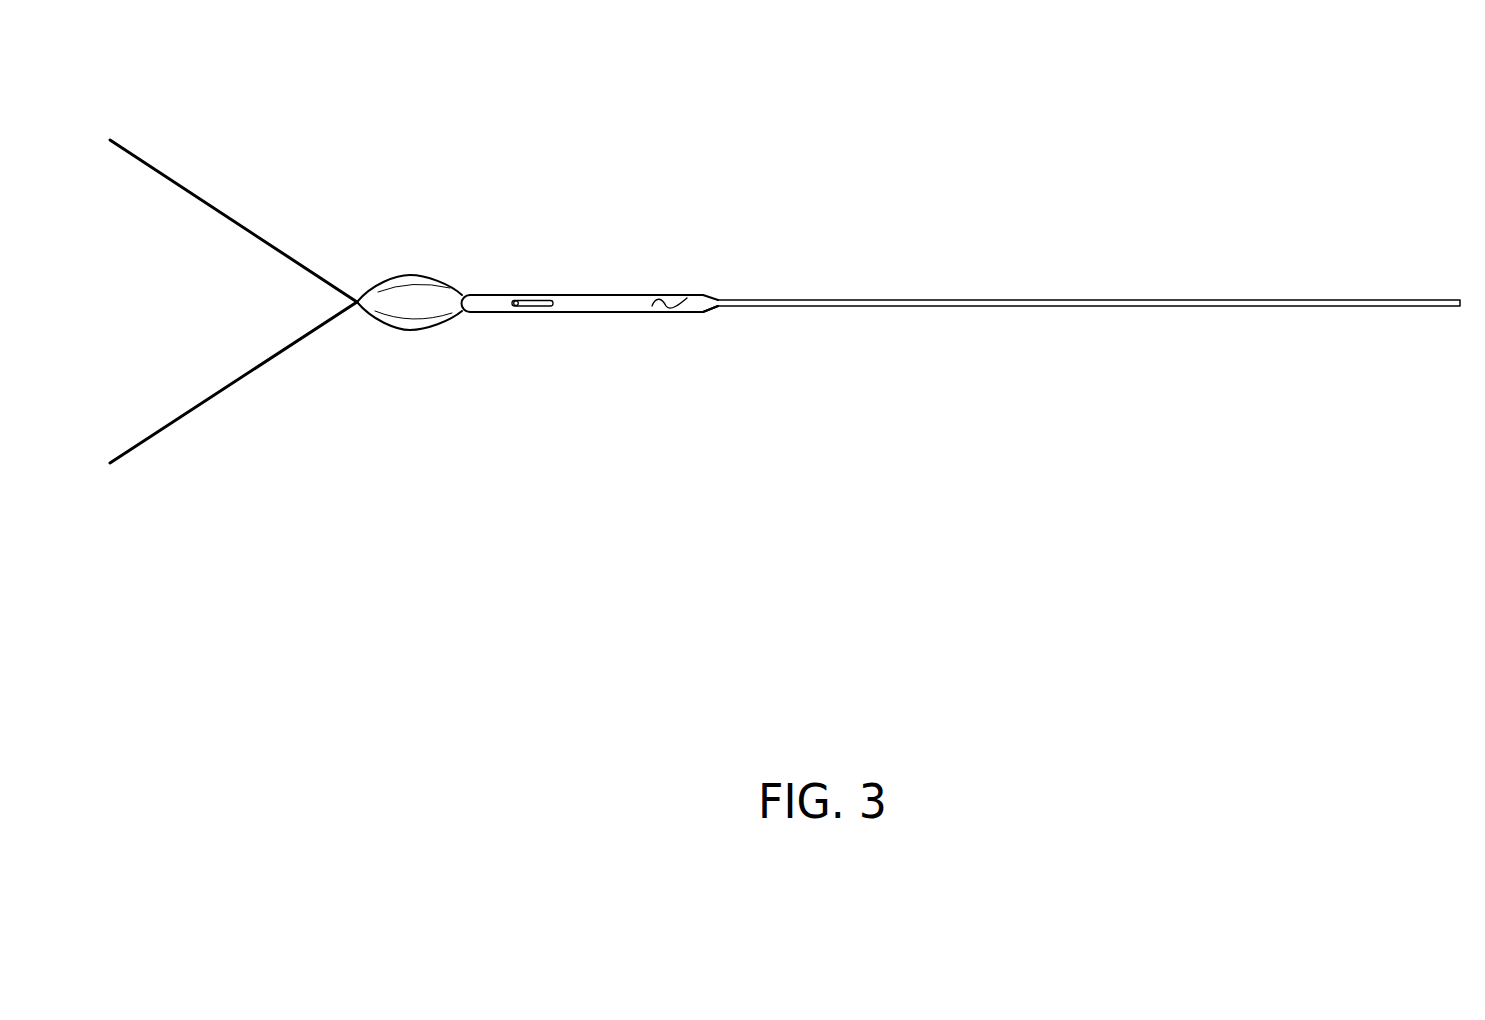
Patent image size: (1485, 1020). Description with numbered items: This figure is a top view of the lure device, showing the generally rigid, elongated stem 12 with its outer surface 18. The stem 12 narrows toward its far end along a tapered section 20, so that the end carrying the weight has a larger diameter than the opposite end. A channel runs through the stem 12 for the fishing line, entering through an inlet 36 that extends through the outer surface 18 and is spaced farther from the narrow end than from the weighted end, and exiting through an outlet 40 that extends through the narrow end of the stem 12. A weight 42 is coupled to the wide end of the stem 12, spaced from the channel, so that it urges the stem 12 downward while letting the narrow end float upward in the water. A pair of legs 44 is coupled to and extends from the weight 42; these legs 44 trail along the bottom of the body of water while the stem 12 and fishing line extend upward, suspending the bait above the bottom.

The stem 12 is at (618, 295).
The outer surface 18 is at (665, 307).
The tapered section 20 is at (712, 298).
The inlet 36 is at (553, 303).
The outlet 40 is at (720, 305).
The weight 42 is at (410, 285).
The pair of legs 44 is at (237, 380).